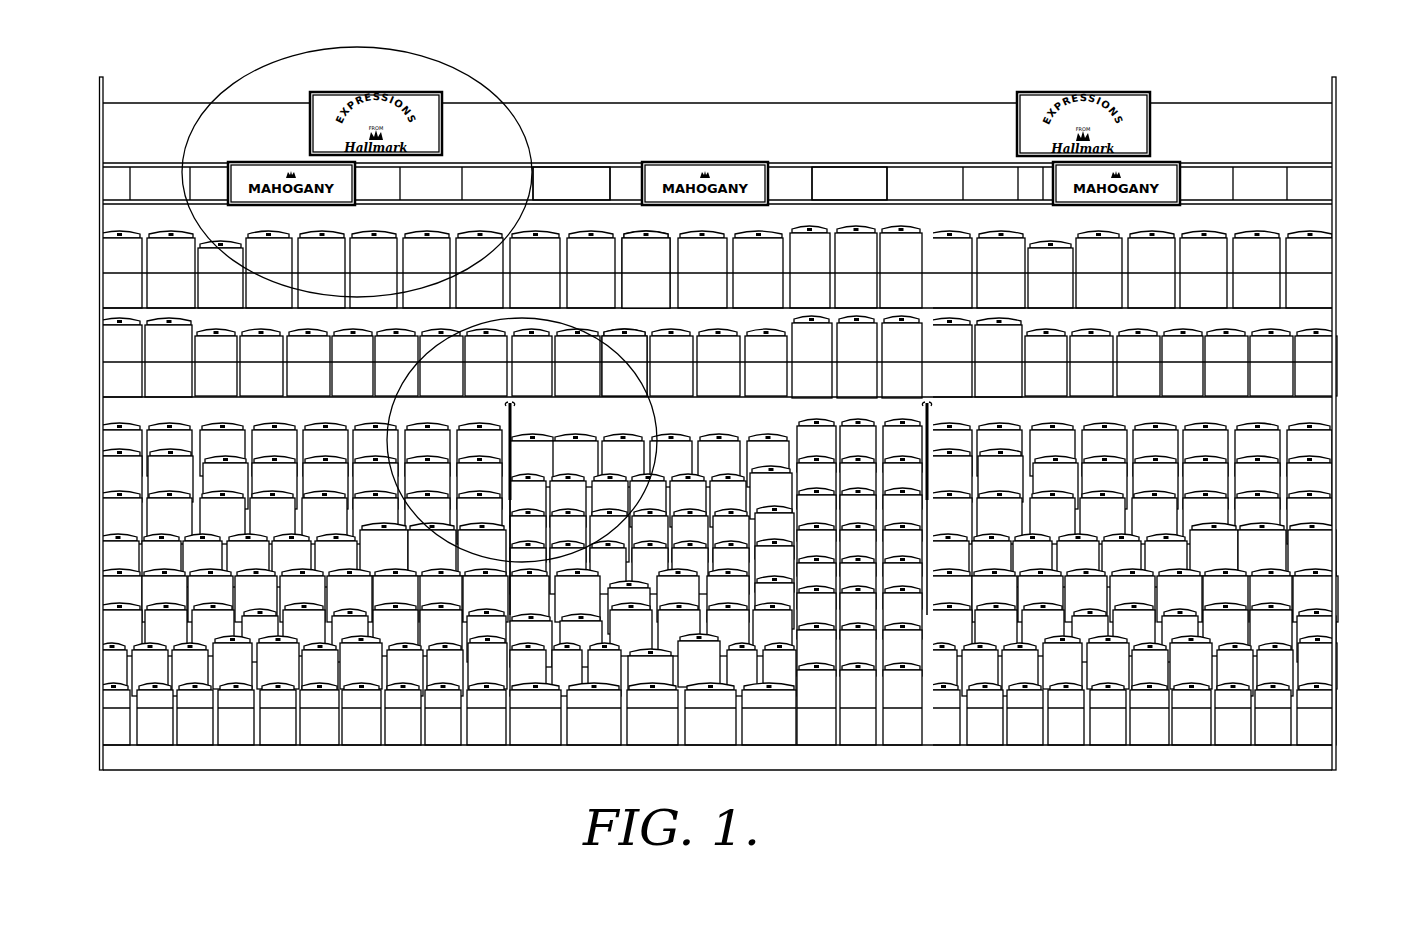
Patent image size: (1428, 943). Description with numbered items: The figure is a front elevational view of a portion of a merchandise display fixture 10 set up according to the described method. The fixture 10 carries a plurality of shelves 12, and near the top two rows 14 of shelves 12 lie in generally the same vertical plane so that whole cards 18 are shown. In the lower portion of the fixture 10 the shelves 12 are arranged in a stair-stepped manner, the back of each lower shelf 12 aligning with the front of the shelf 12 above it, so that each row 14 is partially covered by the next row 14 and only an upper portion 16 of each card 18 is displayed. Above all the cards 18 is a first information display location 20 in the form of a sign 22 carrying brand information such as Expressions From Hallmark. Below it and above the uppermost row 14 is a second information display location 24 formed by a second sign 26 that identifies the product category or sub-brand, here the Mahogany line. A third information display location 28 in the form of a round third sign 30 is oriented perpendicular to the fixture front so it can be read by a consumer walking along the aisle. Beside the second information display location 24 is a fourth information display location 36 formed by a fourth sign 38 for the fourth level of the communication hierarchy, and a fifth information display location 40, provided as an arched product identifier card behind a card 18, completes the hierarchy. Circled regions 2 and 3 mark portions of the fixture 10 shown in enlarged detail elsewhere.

The detail view region of FIG. 2 is at (232, 85).
The detail view region of FIG. 3 is at (393, 430).
The merchandise display fixture 10 is at (1225, 98).
The shelf 12 is at (1327, 298).
The row 14 is at (628, 372).
The upper portion 16 is at (741, 573).
The card 18 is at (113, 258).
The first information display location 20 is at (1133, 97).
The sign 22 is at (425, 93).
The second information display location 24 is at (752, 170).
The second sign 26 is at (1170, 163).
The third information display location 28 is at (514, 423).
The third sign 30 is at (925, 415).
The fourth information display location 36 is at (860, 177).
The fourth sign 38 is at (616, 183).
The fifth information display location 40 is at (672, 437).